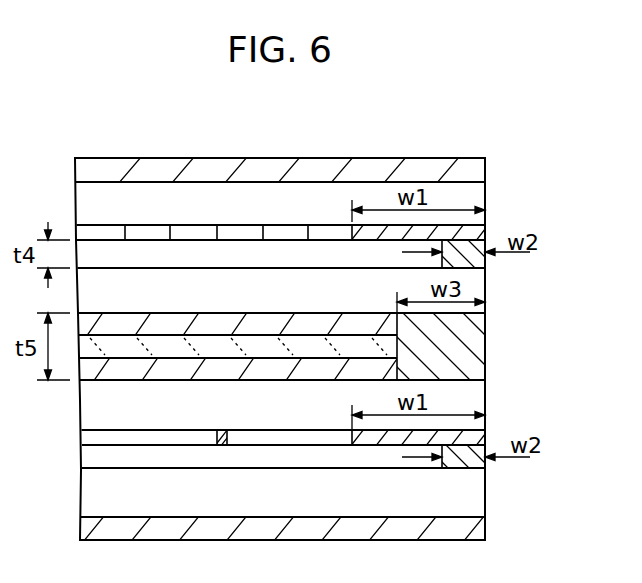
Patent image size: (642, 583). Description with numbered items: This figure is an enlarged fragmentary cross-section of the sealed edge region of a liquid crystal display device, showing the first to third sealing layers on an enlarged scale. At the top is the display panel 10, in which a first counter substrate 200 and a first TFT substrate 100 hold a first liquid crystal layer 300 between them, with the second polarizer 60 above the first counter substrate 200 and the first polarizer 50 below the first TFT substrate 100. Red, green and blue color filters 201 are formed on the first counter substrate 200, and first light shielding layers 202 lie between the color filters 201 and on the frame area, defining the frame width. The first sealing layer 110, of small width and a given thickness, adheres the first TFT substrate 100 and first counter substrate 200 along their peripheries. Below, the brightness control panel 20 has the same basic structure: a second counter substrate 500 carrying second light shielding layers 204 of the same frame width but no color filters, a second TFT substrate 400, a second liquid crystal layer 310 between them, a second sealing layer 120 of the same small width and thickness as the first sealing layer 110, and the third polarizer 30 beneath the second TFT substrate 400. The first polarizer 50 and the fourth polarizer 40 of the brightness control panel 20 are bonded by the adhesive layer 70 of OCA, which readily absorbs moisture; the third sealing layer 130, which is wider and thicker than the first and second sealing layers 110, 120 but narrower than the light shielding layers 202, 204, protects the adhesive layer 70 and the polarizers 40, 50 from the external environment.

The second polarizer 60 is at (455, 158).
The first counter substrate 200 is at (485, 213).
The color filters 201 is at (322, 236).
The first light shielding layers 202 is at (485, 232).
The first sealing layer 110 is at (485, 262).
The first liquid crystal layer 300 is at (173, 257).
The first TFT substrate 100 is at (485, 290).
The display panel 10 is at (565, 180).
The first polarizer 50 is at (346, 323).
The adhesive layer 70 is at (286, 347).
The fourth polarizer 40 is at (224, 368).
The third sealing layer 130 is at (485, 345).
The second counter substrate 500 is at (485, 400).
The second light shielding layers 204 is at (485, 437).
The second sealing layer 120 is at (485, 462).
The second liquid crystal layer 310 is at (206, 458).
The second TFT substrate 400 is at (485, 495).
The brightness control panel 20 is at (565, 380).
The third polarizer 30 is at (485, 527).